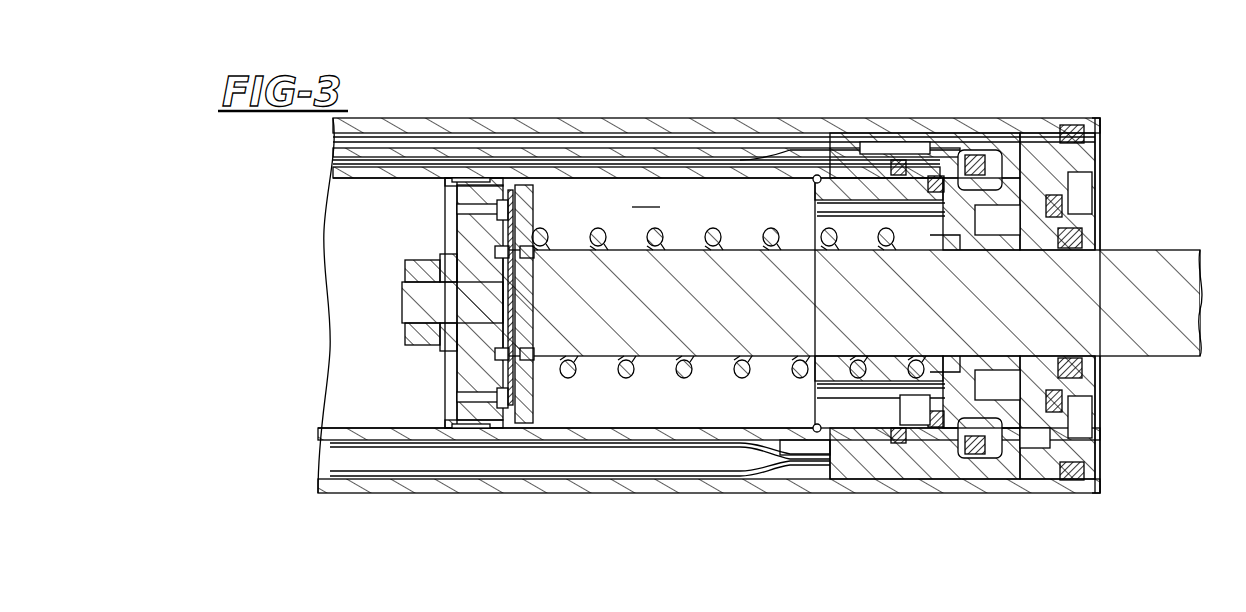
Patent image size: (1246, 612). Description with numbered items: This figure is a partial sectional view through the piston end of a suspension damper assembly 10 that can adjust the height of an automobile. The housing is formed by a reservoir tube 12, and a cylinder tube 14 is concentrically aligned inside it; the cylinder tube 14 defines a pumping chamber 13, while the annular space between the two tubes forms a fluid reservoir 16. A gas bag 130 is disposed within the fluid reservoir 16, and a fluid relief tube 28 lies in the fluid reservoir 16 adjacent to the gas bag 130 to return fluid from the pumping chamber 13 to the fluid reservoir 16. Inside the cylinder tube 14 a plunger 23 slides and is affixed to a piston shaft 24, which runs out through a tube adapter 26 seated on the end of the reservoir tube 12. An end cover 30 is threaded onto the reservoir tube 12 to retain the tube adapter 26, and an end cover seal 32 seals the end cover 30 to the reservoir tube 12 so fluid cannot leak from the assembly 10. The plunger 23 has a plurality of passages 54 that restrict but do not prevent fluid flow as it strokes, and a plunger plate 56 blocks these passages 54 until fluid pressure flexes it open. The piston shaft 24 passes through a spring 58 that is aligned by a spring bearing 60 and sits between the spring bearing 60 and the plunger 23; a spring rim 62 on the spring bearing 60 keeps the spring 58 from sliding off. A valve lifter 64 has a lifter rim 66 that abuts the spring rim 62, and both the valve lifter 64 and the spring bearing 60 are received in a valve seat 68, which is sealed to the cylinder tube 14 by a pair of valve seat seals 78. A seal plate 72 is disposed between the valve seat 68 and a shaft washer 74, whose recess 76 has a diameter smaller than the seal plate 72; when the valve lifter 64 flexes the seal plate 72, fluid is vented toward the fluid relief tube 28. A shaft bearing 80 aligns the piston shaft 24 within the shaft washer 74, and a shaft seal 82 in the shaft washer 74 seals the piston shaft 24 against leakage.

The suspension damper assembly 10 is at (1098, 105).
The reservoir tube 12 is at (514, 118).
The pumping chamber 13 is at (648, 195).
The cylinder tube 14 is at (340, 178).
The fluid reservoir 16 is at (795, 466).
The plunger 23 is at (440, 258).
The piston shaft 24 is at (405, 410).
The tube adapter 26 is at (1100, 408).
The fluid relief tube 28 is at (590, 142).
The end cover 30 is at (1100, 172).
The end cover seal 32 is at (1098, 130).
The passages 54 is at (480, 212).
The plunger plate 56 is at (540, 185).
The spring 58 is at (716, 228).
The spring bearing 60 is at (906, 225).
The spring rim 62 is at (902, 440).
The valve lifter 64 is at (958, 178).
The lifter rim 66 is at (955, 445).
The valve seat 68 is at (866, 190).
The seal plate 72 is at (985, 385).
The shaft washer 74 is at (1045, 250).
The recess 76 is at (1062, 205).
The valve seat seals 78 is at (936, 176).
The shaft bearing 80 is at (1020, 455).
The shaft seal 82 is at (1090, 373).
The gas bag 130 is at (722, 458).